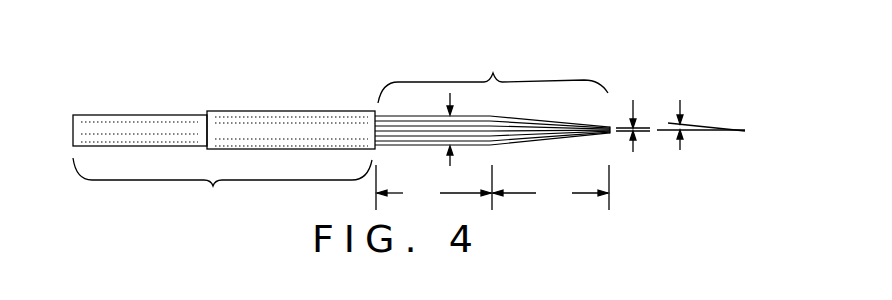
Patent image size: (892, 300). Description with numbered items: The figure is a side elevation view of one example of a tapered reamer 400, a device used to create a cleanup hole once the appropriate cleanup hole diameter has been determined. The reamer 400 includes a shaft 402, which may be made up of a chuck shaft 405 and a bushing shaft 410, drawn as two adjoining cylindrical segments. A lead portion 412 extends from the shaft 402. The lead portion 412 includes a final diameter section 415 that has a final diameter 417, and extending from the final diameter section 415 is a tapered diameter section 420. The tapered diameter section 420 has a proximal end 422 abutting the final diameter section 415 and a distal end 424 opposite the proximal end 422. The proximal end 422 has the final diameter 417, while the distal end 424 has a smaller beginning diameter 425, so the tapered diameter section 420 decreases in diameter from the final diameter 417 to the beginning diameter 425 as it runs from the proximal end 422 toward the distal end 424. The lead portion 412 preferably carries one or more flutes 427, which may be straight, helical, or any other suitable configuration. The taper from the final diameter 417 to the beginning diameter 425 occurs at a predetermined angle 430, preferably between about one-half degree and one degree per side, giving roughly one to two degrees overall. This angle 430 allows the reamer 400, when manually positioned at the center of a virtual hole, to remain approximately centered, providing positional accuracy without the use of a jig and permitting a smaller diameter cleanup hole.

The tapered reamer 400 is at (575, 42).
The shaft 402 is at (222, 184).
The chuck shaft 405 is at (120, 123).
The bushing shaft 410 is at (277, 122).
The lead portion 412 is at (493, 76).
The final diameter section 415 is at (434, 187).
The final diameter 417 is at (450, 97).
The tapered diameter section 420 is at (551, 187).
The proximal end 422 is at (492, 148).
The distal end 424 is at (611, 136).
The beginning diameter 425 is at (635, 102).
The flutes 427 is at (431, 137).
The predetermined angle 430 is at (683, 103).